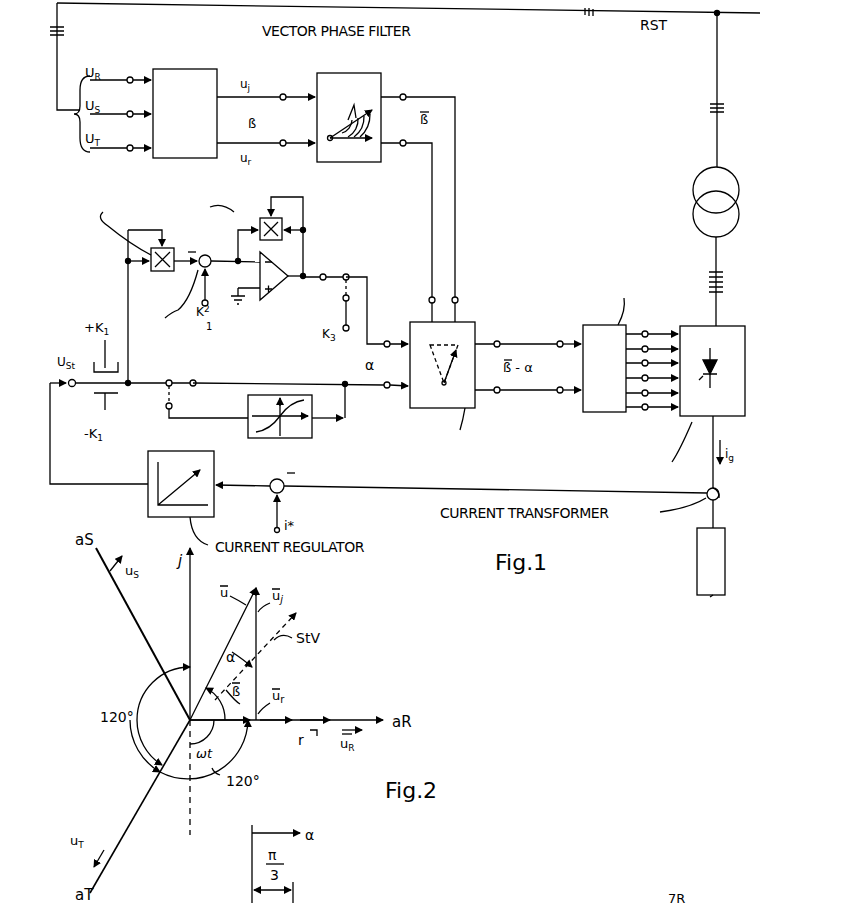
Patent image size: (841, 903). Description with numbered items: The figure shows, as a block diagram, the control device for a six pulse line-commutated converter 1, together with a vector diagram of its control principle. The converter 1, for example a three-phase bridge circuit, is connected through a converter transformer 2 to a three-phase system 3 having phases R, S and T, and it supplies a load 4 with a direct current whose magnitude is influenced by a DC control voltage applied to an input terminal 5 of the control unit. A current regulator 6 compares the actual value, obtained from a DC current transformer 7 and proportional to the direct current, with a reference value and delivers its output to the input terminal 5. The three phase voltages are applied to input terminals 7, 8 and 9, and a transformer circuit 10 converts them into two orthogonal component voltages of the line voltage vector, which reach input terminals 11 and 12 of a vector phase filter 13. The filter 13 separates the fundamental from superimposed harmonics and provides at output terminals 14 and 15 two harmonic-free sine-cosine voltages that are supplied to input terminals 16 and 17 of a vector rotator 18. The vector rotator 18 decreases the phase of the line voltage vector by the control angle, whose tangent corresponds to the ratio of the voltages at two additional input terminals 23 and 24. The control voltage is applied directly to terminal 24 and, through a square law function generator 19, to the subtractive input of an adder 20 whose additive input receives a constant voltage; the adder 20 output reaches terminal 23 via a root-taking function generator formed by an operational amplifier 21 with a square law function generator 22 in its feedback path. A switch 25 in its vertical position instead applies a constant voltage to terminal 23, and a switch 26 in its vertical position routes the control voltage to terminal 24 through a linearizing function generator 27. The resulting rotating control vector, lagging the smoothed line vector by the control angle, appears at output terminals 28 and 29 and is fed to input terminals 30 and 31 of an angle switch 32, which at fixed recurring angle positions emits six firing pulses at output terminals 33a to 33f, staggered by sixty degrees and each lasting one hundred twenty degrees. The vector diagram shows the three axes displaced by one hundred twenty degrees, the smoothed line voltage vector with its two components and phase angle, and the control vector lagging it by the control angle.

The converter 1 is at (700, 326).
The converter transformer 2 is at (693, 212).
The three-phase system 3 is at (535, 9).
The load 4 is at (700, 552).
The input terminal 5 is at (78, 386).
The current regulator 6 is at (148, 497).
The DC current transformer 7 is at (130, 82).
The input terminal 8 is at (130, 116).
The input terminal 9 is at (130, 150).
The transformer circuit 10 is at (200, 50).
The input terminal 11 is at (288, 94).
The input terminal 12 is at (280, 146).
The vector phase filter 13 is at (400, 54).
The output terminal 14 is at (406, 94).
The output terminal 15 is at (396, 146).
The input terminal 16 is at (428, 298).
The input terminal 17 is at (468, 295).
The vector rotator 18 is at (452, 408).
The square law function generator 19 is at (164, 272).
The adder 20 is at (207, 255).
The operational amplifier 21 is at (262, 330).
The square law function generator 22 is at (260, 218).
The input terminal 23 is at (380, 346).
The input terminal 24 is at (380, 390).
The switch 25 is at (334, 277).
The switch 26 is at (172, 380).
The linearizing function generator 27 is at (364, 440).
The output terminal 28 is at (490, 394).
The output terminal 29 is at (500, 341).
The input terminal 30 is at (552, 394).
The input terminal 31 is at (556, 340).
The angle switch 32 is at (606, 412).
The output terminal 33a is at (642, 332).
The output terminal 33f is at (640, 410).